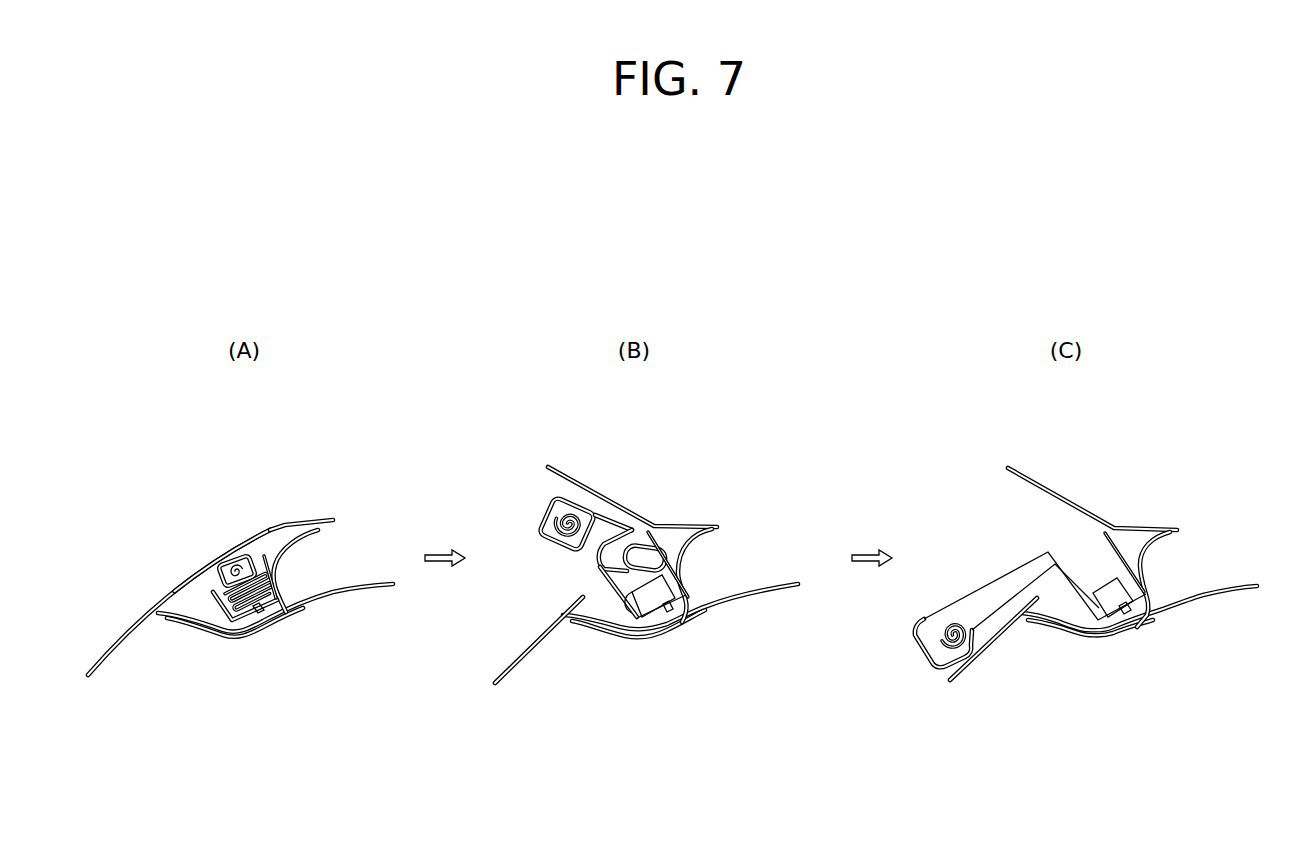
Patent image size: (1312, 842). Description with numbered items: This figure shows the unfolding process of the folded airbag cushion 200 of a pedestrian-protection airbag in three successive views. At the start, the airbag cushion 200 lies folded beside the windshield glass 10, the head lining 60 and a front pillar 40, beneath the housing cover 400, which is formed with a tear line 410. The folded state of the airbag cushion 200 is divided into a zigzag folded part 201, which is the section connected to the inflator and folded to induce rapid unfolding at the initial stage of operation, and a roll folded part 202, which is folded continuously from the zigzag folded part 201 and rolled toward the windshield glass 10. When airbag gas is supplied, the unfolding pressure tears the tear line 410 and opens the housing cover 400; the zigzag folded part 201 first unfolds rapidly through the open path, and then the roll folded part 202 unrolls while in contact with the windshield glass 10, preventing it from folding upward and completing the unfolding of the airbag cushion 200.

The windshield glass 10 is at (118, 642).
The front pillar 40 is at (188, 620).
The head lining 60 is at (338, 593).
The airbag cushion 200 is at (214, 581).
The zigzag folded part 201 is at (277, 576).
The roll folded part 202 is at (240, 560).
The housing cover 400 is at (268, 527).
The tear line 410 is at (168, 597).